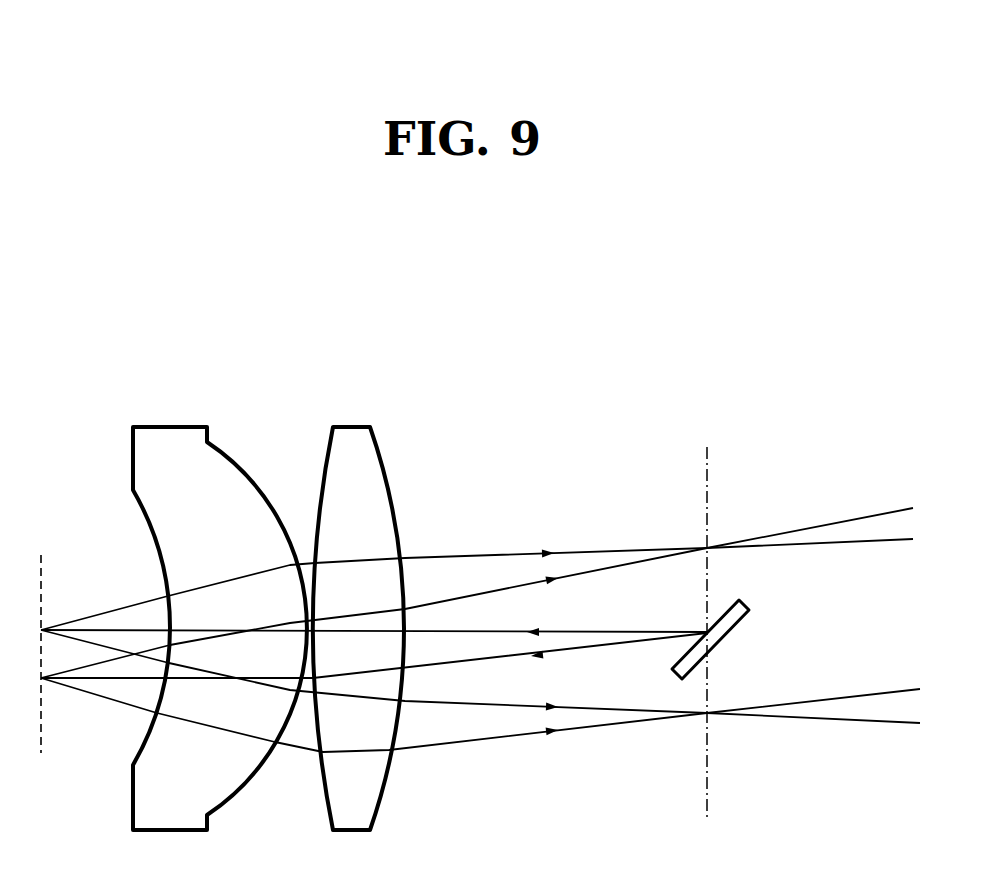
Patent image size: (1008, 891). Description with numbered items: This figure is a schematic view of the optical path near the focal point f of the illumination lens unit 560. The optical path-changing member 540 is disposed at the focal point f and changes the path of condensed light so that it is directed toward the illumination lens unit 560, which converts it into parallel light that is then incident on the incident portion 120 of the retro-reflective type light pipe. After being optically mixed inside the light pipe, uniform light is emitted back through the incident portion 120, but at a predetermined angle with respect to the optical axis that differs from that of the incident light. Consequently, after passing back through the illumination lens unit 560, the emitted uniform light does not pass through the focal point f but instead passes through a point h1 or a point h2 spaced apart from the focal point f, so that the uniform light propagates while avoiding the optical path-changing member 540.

The incident portion 120 is at (42, 725).
The illumination lens unit 560 is at (418, 400).
The optical path-changing member 540 is at (747, 618).
The point h1 is at (734, 516).
The point h2 is at (689, 738).
The focal point f is at (718, 640).